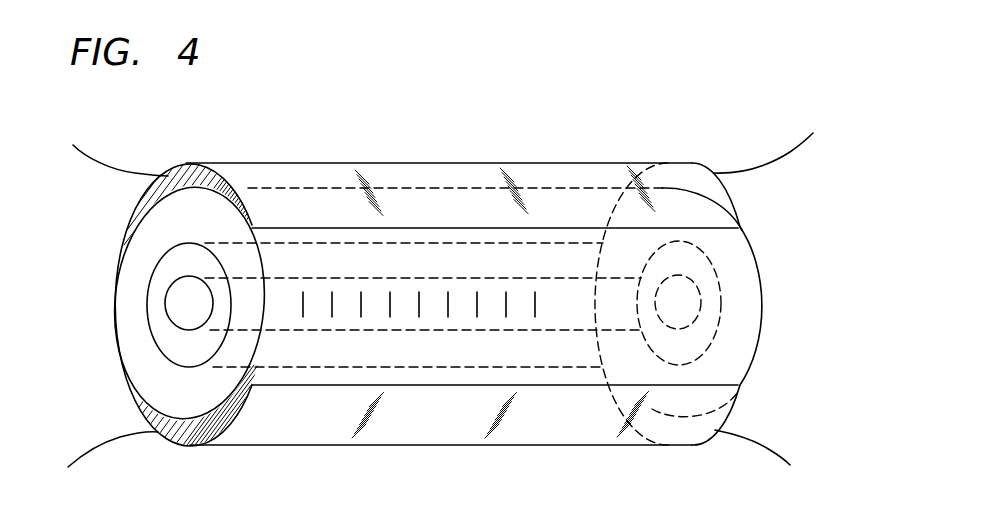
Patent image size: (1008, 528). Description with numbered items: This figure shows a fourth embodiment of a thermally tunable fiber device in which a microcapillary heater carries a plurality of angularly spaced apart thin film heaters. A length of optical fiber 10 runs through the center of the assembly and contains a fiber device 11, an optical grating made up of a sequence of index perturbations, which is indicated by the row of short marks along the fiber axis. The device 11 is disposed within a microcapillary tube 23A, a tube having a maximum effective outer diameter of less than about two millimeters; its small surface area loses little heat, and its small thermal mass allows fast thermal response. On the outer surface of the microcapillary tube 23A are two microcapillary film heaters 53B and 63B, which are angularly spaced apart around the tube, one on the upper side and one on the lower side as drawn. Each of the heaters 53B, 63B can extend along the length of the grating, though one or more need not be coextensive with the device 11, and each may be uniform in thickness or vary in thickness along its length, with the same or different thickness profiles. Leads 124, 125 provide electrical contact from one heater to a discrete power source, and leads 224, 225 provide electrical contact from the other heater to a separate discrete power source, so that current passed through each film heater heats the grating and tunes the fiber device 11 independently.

The optical fiber 10 is at (173, 309).
The fiber device 11 is at (333, 302).
The microcapillary tube 23A is at (123, 277).
The microcapillary film heater 53B is at (583, 168).
The microcapillary film heater 63B is at (648, 450).
The lead 124 is at (778, 168).
The lead 125 is at (110, 173).
The lead 224 is at (763, 443).
The lead 225 is at (110, 439).